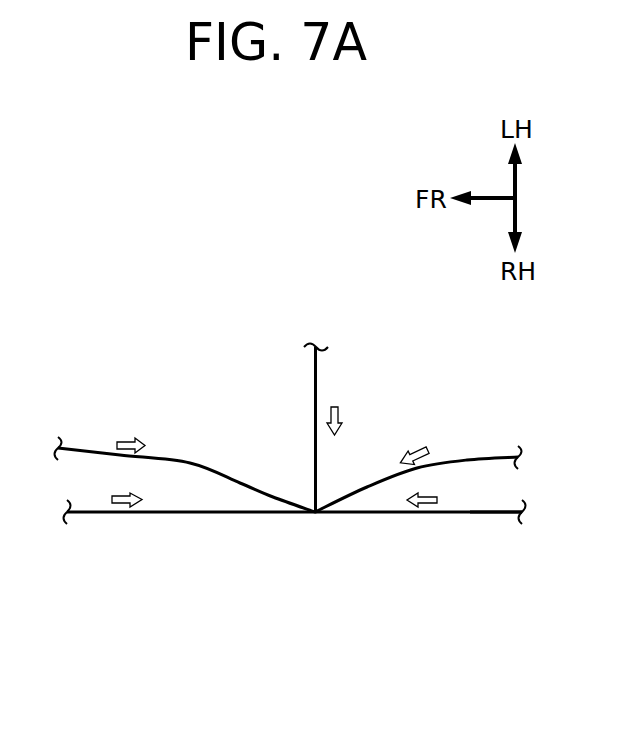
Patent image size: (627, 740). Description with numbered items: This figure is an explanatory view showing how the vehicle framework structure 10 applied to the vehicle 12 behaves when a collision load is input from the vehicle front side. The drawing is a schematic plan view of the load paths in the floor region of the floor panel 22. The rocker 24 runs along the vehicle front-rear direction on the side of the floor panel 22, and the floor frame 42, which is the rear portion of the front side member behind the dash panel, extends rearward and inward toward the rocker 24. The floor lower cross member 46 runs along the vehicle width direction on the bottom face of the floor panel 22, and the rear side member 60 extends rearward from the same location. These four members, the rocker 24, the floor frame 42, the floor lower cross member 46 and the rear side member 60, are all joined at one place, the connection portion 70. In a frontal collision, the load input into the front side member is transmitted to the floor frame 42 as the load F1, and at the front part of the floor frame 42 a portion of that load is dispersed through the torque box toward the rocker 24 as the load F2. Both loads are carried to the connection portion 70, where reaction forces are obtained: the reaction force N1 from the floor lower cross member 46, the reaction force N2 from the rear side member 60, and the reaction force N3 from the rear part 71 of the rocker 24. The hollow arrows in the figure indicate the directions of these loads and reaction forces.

The vehicle framework structure 10 is at (461, 659).
The vehicle 12 is at (415, 628).
The floor panel 22 is at (428, 362).
The rocker 24 is at (188, 514).
The floor frame 42 is at (190, 462).
The floor lower cross member 46 is at (318, 369).
The rear side member 60 is at (478, 458).
The connection portion 70 is at (315, 514).
The rear part of the rocker 71 is at (483, 514).
The collision load transmitted to the floor frame F1 is at (128, 437).
The collision load dispersed toward the rocker F2 is at (120, 507).
The reaction force from the floor lower cross member N1 is at (340, 411).
The reaction force from the rear side member N2 is at (423, 450).
The reaction force from the rear part of the rocker N3 is at (425, 507).